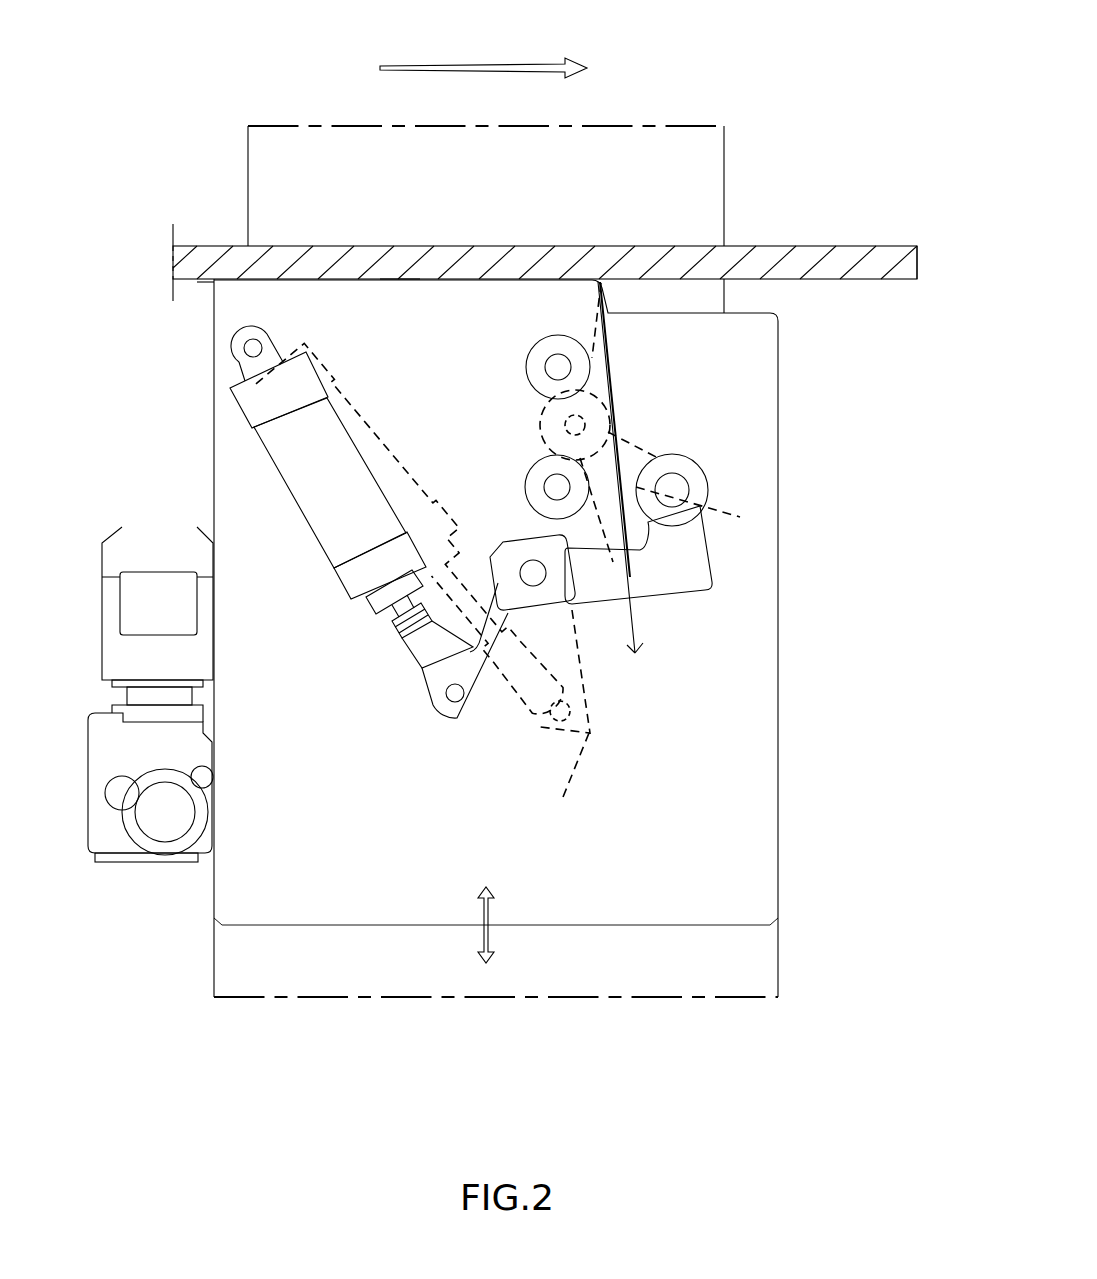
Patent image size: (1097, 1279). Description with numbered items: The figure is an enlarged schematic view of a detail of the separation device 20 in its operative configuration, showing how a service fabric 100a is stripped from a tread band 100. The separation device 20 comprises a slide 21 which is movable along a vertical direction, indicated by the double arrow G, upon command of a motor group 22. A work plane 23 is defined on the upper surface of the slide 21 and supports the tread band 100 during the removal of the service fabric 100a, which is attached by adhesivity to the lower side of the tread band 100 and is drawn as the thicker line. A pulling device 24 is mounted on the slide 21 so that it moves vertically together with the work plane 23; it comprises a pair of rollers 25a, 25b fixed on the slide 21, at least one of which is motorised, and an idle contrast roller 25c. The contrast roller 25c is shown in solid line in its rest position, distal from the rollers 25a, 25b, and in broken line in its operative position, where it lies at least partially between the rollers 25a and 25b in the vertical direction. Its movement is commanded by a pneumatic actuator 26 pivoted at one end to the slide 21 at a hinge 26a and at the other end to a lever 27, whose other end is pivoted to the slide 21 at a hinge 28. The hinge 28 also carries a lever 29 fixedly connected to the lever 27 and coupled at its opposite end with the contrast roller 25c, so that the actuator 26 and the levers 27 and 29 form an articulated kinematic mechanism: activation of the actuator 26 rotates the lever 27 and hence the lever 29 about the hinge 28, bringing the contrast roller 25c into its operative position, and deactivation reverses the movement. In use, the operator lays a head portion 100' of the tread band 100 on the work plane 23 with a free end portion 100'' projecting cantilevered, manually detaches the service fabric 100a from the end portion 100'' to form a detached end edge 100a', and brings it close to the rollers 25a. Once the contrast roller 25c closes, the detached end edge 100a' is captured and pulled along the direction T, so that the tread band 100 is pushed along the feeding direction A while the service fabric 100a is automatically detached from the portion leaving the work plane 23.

The feeding direction A is at (520, 66).
The separation device 20 is at (673, 110).
The slide 21 is at (778, 668).
The motor group 22 is at (112, 526).
The work plane 23 is at (398, 276).
The pulling device 24 is at (432, 725).
The roller 25a is at (565, 345).
The roller 25b is at (552, 456).
The contrast roller 25c is at (548, 415).
The actuator 26 is at (351, 609).
The hinge 26a is at (253, 348).
The lever 27 is at (457, 712).
The hinge 28 is at (533, 573).
The lever 29 is at (690, 553).
The tread band 100 is at (545, 220).
The head portion 100' is at (176, 228).
The free end portion 100'' is at (919, 300).
The service fabric 100a is at (170, 330).
The detached end edge 100a' is at (743, 411).
The pulling direction T is at (637, 617).
The double arrow G is at (490, 938).